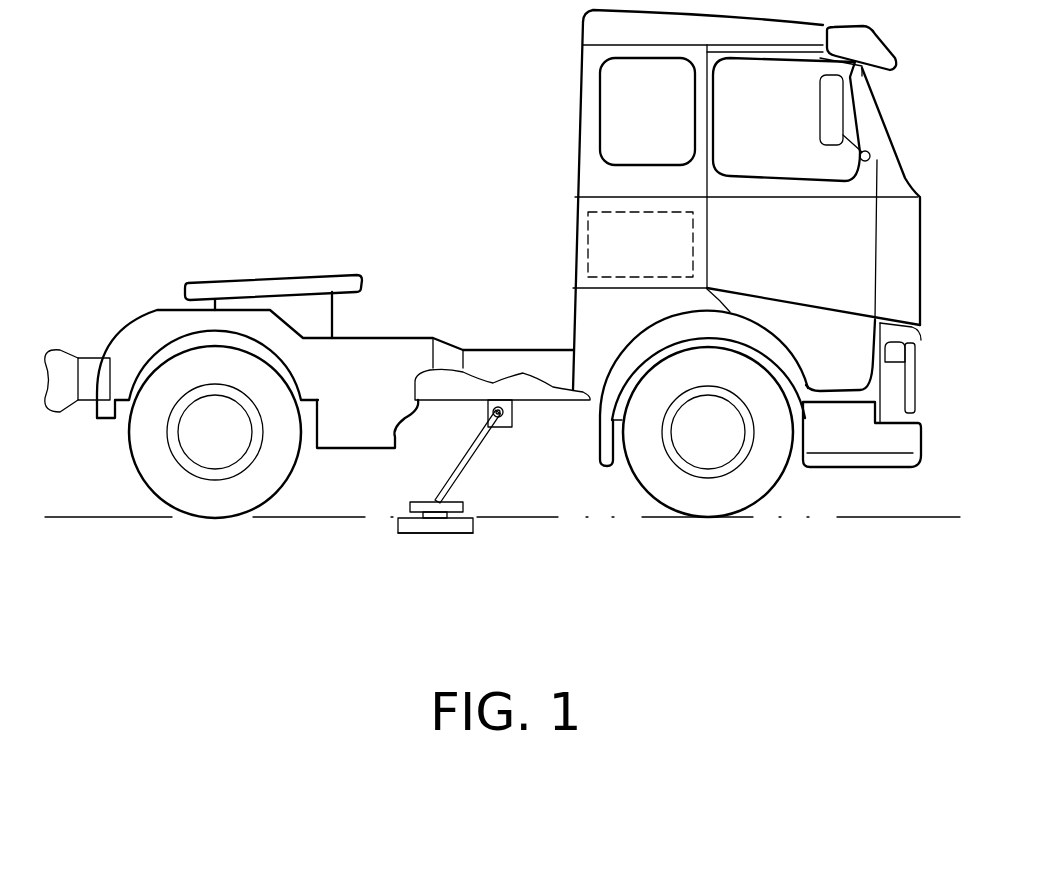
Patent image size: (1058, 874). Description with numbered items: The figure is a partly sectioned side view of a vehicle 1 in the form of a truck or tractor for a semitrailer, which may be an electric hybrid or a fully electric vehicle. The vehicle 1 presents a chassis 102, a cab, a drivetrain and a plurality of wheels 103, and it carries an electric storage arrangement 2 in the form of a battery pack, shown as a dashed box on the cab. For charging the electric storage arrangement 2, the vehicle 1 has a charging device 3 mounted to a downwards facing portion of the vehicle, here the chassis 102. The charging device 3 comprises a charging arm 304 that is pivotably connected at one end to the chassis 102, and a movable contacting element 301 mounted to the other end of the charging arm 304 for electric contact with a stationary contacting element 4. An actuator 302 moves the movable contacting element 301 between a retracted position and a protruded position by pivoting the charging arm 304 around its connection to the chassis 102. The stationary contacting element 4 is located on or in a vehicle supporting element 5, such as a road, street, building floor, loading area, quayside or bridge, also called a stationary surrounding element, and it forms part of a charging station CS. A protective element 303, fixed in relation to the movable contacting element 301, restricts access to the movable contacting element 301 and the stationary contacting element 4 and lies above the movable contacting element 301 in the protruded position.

The vehicle 1 is at (596, 176).
The electric storage arrangement 2 is at (588, 244).
The charging device 3 is at (440, 440).
The stationary contacting element 4 is at (403, 523).
The vehicle supporting element 5 is at (869, 518).
The chassis 102 is at (338, 450).
The wheels 103 is at (193, 498).
The movable contacting element 301 is at (437, 507).
The actuator 302 is at (500, 405).
The protective element 303 is at (444, 568).
The charging arm 304 is at (477, 457).
The charging station CS is at (388, 548).